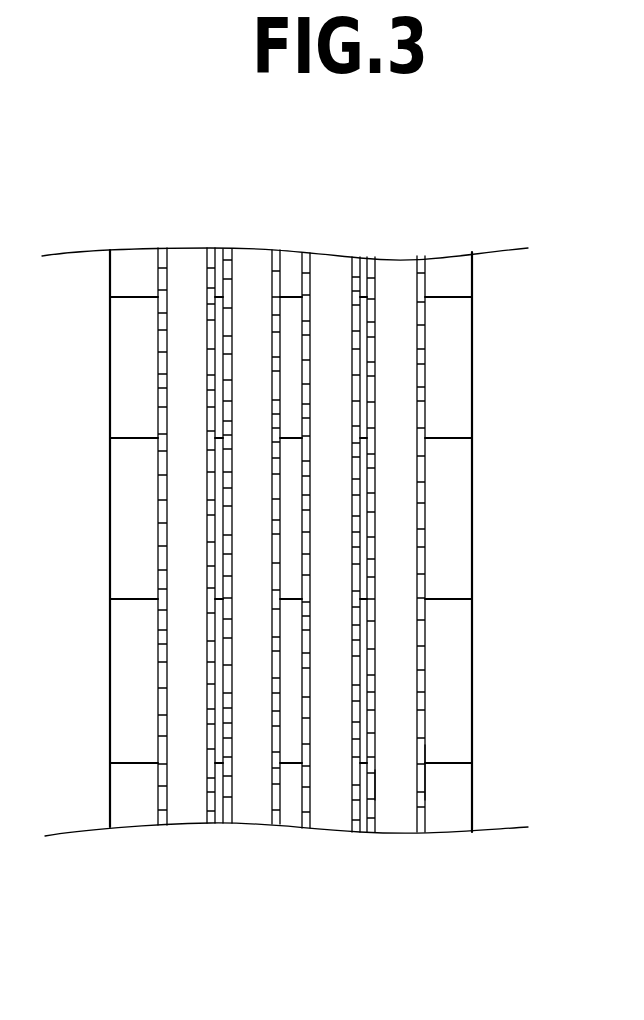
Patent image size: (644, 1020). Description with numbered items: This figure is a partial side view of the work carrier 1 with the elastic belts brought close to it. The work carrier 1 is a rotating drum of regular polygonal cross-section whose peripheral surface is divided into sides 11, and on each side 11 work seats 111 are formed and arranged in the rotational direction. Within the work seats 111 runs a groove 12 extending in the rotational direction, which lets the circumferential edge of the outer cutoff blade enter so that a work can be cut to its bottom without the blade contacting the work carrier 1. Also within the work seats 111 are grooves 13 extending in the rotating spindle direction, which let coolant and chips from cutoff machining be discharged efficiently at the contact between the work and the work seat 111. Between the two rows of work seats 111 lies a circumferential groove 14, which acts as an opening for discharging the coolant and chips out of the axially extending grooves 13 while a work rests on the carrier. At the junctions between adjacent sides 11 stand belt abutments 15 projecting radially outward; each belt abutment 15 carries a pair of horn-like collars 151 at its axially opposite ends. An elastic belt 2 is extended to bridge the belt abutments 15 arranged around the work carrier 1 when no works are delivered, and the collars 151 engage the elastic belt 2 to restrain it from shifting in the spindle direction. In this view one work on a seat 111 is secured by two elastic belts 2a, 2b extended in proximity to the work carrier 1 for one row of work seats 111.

The work carrier 1 is at (459, 318).
The side 11 is at (455, 353).
The work seat 111 is at (425, 384).
The groove 13 is at (421, 401).
The elastic belt 2 is at (403, 557).
The elastic belt 2a is at (398, 272).
The elastic belt 2b is at (331, 273).
The groove 12 is at (363, 272).
The groove 14 is at (293, 275).
The belt abutment 15 is at (427, 736).
The collar 151 is at (417, 745).